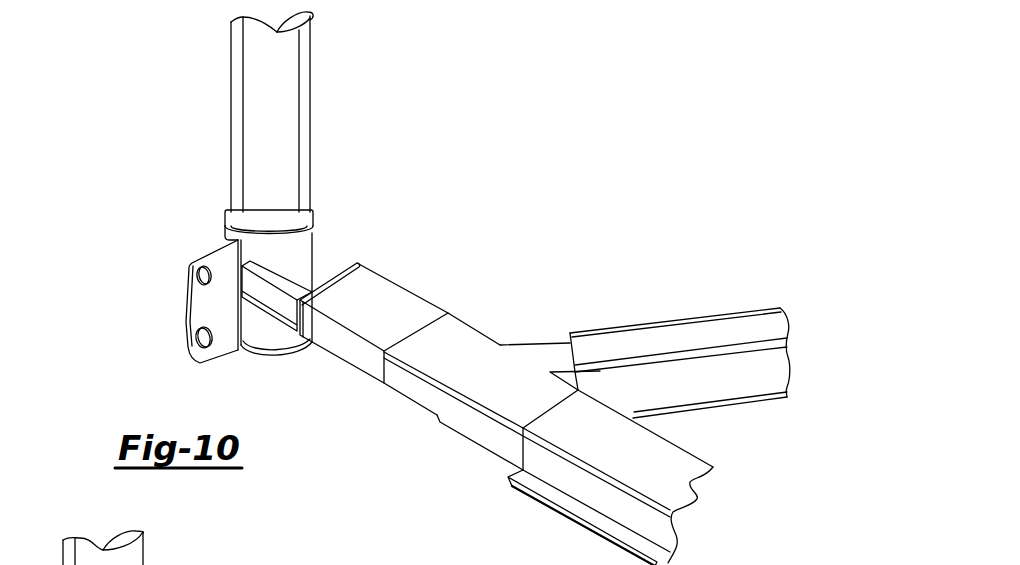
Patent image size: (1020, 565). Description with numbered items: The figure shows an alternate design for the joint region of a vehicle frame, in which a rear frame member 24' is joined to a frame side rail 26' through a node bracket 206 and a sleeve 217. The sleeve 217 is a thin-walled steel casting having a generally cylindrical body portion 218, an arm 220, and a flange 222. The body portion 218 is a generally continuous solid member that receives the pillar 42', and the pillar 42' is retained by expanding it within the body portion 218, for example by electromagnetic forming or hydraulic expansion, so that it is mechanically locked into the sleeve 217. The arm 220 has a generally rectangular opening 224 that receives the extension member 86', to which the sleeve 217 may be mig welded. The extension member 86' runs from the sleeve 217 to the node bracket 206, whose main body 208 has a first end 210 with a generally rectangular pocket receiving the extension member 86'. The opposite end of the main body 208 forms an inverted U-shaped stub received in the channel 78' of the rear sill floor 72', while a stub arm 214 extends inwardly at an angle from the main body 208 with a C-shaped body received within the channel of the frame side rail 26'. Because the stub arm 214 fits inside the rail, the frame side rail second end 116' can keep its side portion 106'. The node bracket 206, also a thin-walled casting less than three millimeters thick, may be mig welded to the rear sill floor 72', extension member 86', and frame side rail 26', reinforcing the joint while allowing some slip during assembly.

The pillar 42' is at (298, 112).
The sleeve 217 is at (243, 278).
The body portion 218 is at (264, 340).
The arm 220 is at (323, 248).
The flange 222 is at (199, 312).
The rectangular opening 224 is at (352, 266).
The extension member 86' is at (400, 298).
The first end 210 is at (448, 313).
The stub arm 214 is at (551, 346).
The rear frame member 24' is at (448, 347).
The frame side rail 26' is at (680, 353).
The frame side rail second end 116' is at (678, 333).
The side portion 106' is at (710, 409).
The rear sill floor 72' is at (612, 477).
The channel 78' is at (707, 516).
The node bracket 206 is at (454, 445).
The main body 208 is at (483, 464).